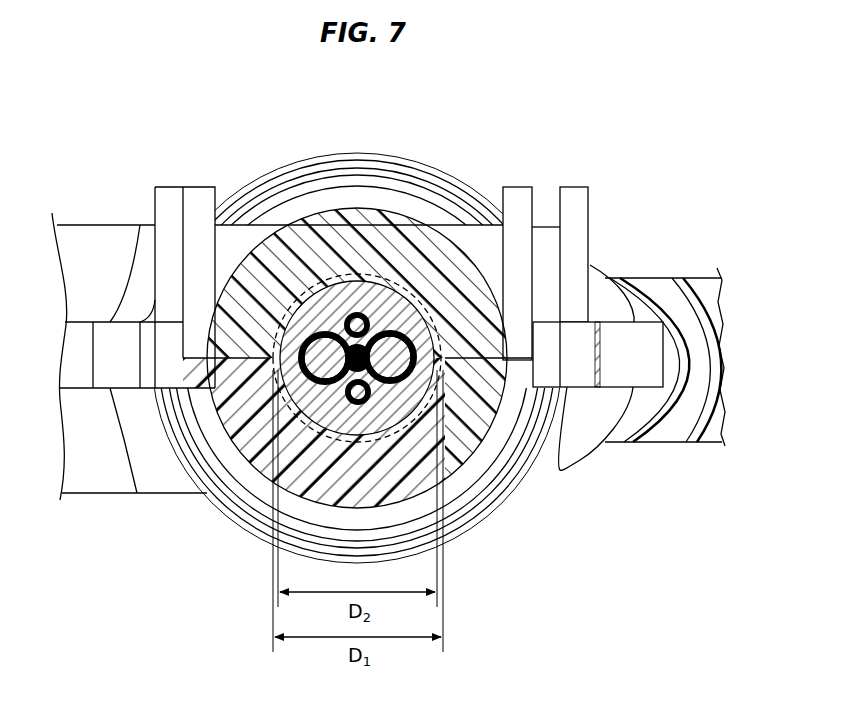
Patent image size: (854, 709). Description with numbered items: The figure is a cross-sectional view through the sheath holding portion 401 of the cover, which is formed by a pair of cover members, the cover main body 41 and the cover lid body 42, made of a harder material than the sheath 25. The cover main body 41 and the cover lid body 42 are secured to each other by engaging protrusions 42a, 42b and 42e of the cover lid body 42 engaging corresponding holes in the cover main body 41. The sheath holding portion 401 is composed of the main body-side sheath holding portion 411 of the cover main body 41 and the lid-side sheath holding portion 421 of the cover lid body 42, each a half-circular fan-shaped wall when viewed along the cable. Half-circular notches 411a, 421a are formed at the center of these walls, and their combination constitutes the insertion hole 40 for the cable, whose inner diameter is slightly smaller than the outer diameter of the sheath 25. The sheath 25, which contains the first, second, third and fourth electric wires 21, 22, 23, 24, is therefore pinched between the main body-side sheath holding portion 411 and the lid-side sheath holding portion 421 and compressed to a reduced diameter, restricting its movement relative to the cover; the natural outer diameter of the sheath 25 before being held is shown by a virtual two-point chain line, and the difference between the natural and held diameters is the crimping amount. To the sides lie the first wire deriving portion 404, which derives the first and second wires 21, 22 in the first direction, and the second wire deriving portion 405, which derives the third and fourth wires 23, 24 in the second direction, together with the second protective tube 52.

The first wire deriving portion 404 is at (124, 216).
The engaging protrusion 42e is at (247, 232).
The lid-side sheath holding portion 421 is at (310, 215).
The sheath holding portion 401 is at (344, 200).
The insertion hole 40 is at (373, 297).
The cover lid body 42 is at (437, 173).
The engaging protrusion 42a is at (470, 238).
The engaging protrusion 42b is at (538, 235).
The second protective tube 52 is at (668, 293).
The third electric wire 23 is at (357, 322).
The half-circular notch 421a is at (395, 290).
The first electric wire 21 is at (328, 358).
The second electric wire 22 is at (392, 357).
The half-circular notch 411a is at (314, 418).
The fourth electric wire 24 is at (359, 394).
The sheath 25 is at (390, 406).
The main body-side sheath holding portion 411 is at (248, 455).
The cover main body 41 is at (475, 523).
The second wire deriving portion 405 is at (590, 468).